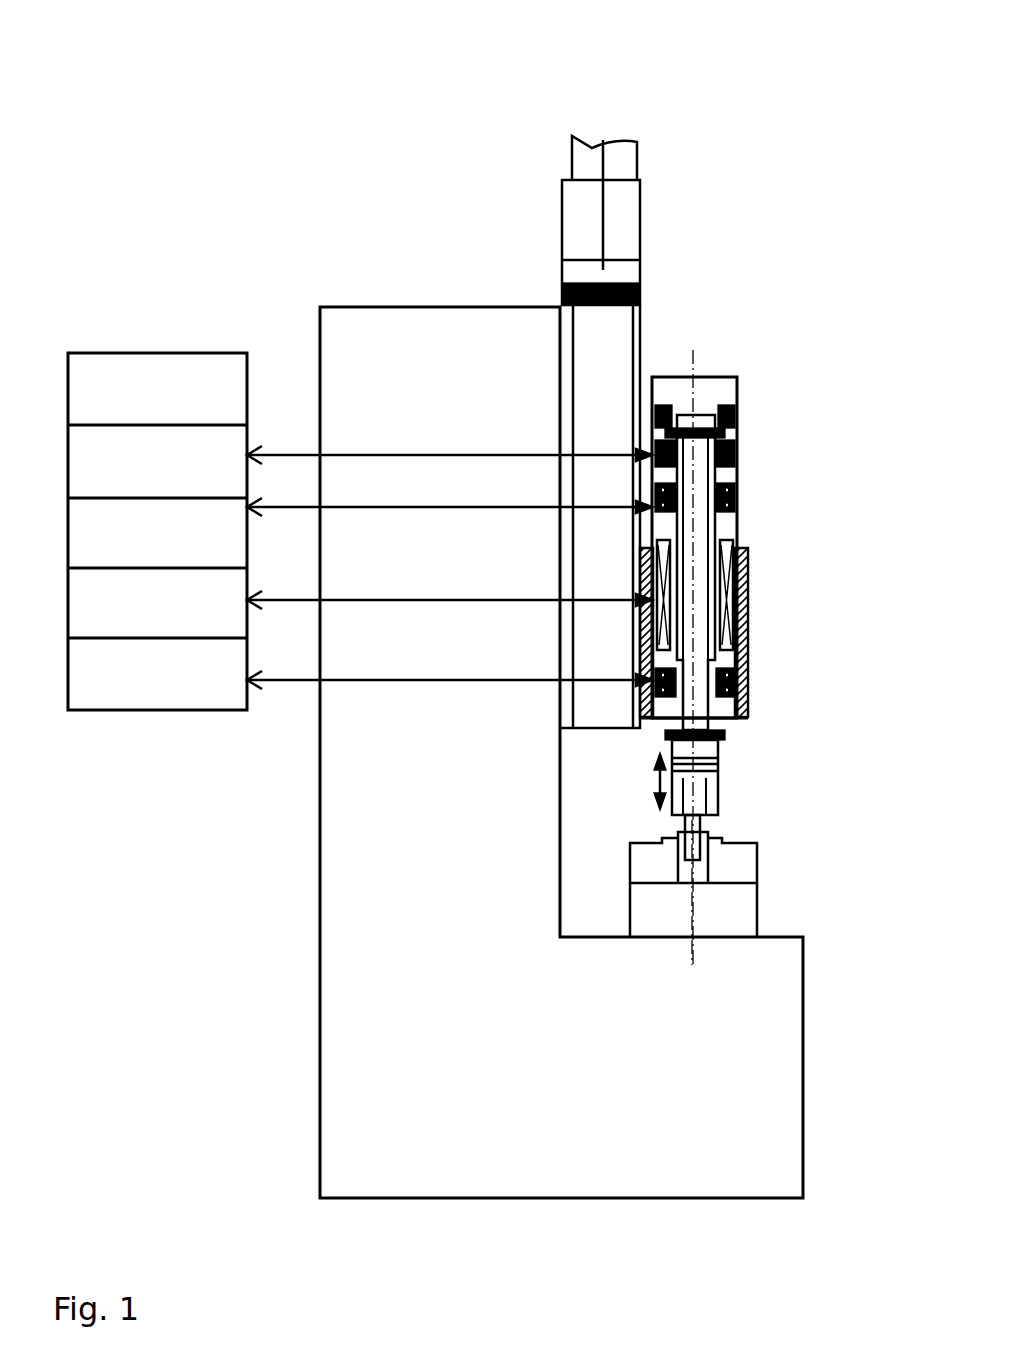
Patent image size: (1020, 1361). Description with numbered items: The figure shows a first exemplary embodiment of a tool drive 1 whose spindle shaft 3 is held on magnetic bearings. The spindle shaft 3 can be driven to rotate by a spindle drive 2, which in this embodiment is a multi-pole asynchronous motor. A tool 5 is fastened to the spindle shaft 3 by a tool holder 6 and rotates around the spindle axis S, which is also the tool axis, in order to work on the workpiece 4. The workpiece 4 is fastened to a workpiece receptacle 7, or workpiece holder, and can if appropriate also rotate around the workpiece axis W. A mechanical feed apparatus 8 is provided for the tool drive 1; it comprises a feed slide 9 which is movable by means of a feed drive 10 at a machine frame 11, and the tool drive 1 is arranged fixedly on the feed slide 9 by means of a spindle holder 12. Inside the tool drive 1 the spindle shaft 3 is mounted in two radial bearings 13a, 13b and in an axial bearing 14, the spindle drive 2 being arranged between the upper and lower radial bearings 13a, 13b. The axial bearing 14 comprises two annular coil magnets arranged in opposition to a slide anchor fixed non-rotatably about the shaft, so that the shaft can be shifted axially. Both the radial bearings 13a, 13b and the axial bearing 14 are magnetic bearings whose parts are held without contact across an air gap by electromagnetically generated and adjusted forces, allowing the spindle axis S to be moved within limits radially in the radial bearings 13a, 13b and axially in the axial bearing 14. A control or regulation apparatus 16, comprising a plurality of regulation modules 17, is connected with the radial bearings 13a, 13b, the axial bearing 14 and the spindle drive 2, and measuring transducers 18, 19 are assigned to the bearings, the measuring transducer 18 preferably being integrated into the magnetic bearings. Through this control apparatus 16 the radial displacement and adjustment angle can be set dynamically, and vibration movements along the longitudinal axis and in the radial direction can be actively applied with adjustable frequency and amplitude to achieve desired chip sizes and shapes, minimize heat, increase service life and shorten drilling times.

The tool drive 1 is at (745, 378).
The spindle drive 2 is at (752, 603).
The spindle shaft 3 is at (735, 545).
The workpiece 4 is at (708, 835).
The tool 5 is at (685, 826).
The tool holder 6 is at (715, 778).
The workpiece receptacle 7 is at (752, 860).
The feed apparatus 8 is at (630, 125).
The feed slide 9 is at (617, 730).
The feed drive 10 is at (565, 195).
The machine frame 11 is at (470, 993).
The spindle holder 12 is at (748, 575).
The radial bearing 13a is at (736, 493).
The radial bearing 13b is at (750, 680).
The axial bearing 14 is at (735, 428).
The control or regulation apparatus 16 is at (100, 345).
The regulation modules 17 is at (158, 698).
The measuring transducer 18 is at (640, 660).
The measuring transducer 19 is at (637, 438).
The spindle axis S is at (679, 639).
The workpiece axis W is at (693, 920).